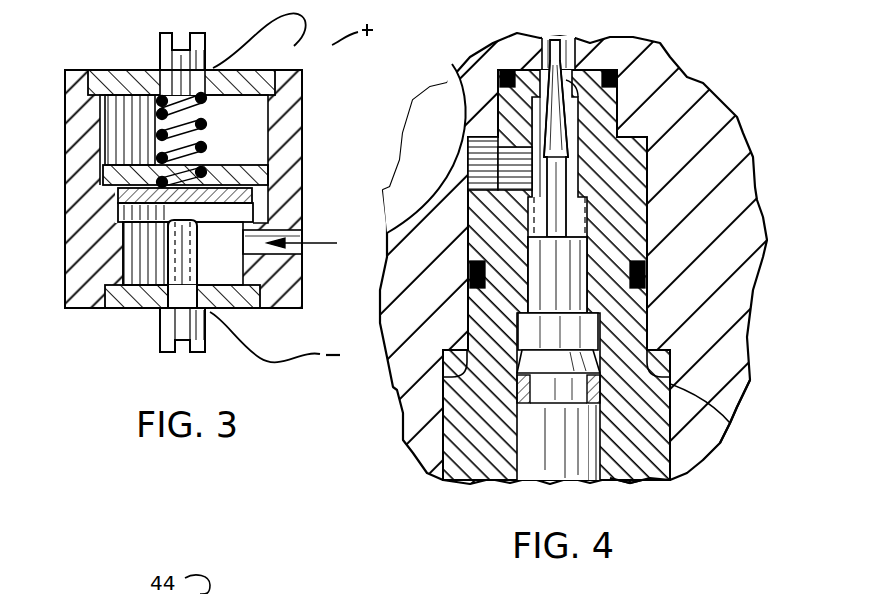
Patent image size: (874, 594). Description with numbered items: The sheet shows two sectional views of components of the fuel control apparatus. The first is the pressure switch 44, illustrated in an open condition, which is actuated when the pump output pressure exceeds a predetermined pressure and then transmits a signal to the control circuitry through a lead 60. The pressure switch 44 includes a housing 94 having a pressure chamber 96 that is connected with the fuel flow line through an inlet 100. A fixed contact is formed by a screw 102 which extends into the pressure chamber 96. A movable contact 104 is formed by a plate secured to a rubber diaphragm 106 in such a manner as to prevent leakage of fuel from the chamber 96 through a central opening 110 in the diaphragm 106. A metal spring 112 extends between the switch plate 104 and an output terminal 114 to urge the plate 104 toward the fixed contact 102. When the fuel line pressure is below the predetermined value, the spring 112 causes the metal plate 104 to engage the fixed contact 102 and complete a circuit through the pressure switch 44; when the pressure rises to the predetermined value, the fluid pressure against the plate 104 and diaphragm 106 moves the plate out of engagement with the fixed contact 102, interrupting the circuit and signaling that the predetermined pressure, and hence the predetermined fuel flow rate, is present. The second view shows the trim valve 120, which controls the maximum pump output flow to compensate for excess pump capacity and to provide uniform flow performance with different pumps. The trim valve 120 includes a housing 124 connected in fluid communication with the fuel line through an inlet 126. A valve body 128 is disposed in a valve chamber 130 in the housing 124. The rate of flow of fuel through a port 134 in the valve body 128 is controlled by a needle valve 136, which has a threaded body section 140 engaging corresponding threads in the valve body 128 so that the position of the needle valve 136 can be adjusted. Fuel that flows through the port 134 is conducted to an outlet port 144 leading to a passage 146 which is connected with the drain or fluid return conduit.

In FIG. 3, the pressure switch 44 is at (78, 323).
In FIG. 3, the lead 60 is at (291, 187).
In FIG. 3, the housing 94 is at (65, 172).
In FIG. 3, the pressure chamber 96 is at (143, 247).
In FIG. 3, the inlet 100 is at (292, 247).
In FIG. 3, the screw 102 is at (182, 293).
In FIG. 3, the movable contact 104 is at (283, 224).
In FIG. 3, the rubber diaphragm 106 is at (262, 200).
In FIG. 3, the central opening 110 is at (214, 180).
In FIG. 3, the metal spring 112 is at (203, 113).
In FIG. 3, the output terminal 114 is at (165, 58).
In FIG. 4, the trim valve 120 is at (422, 485).
In FIG. 4, the housing 124 is at (757, 182).
In FIG. 4, the inlet 126 is at (558, 40).
In FIG. 4, the valve body 128 is at (647, 468).
In FIG. 4, the valve chamber 130 is at (729, 420).
In FIG. 4, the port 134 is at (572, 78).
In FIG. 4, the needle valve 136 is at (556, 166).
In FIG. 4, the threaded body section 140 is at (566, 283).
In FIG. 4, the outlet port 144 is at (468, 200).
In FIG. 4, the passage 146 is at (413, 140).